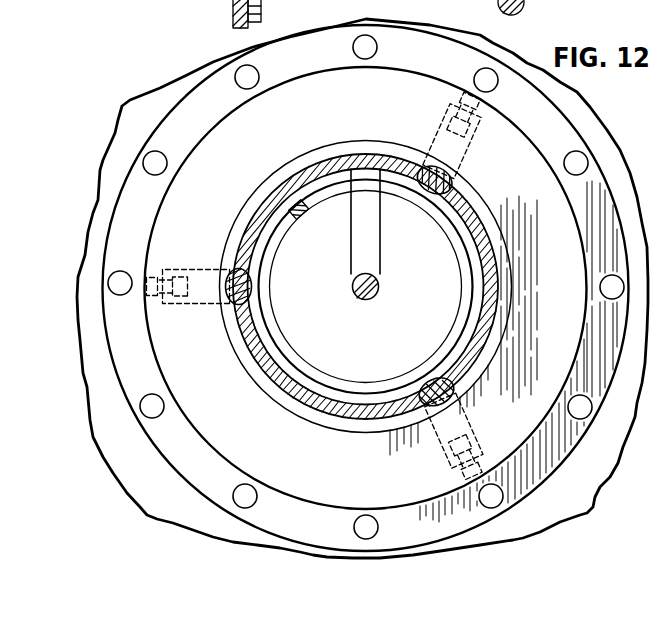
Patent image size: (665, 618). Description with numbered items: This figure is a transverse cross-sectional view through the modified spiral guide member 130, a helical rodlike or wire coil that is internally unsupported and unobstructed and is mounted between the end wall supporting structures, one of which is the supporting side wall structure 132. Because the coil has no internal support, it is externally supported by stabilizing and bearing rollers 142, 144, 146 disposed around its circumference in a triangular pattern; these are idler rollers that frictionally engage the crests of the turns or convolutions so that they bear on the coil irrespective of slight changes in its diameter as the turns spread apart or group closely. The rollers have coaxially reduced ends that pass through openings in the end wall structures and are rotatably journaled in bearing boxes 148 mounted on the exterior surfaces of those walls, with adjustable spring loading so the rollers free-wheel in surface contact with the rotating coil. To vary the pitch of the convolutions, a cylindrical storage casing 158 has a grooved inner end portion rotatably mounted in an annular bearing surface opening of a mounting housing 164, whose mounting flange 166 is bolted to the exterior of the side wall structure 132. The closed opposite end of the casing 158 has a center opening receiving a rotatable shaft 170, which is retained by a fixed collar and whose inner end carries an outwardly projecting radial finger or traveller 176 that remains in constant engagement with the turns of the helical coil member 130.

The spiral guide member 130 is at (451, 218).
The end wall supporting structure 132 is at (566, 495).
The stabilizing and bearing roller 142 is at (447, 192).
The stabilizing and bearing roller 144 is at (430, 381).
The stabilizing and bearing roller 146 is at (253, 286).
The bearing box 148 is at (496, 426).
The cylindrical storage casing 158 is at (490, 277).
The mounting housing 164 is at (564, 332).
The mounting flange 166 is at (259, 125).
The rotatable shaft 170 is at (379, 287).
The radial finger or traveller 176 is at (366, 229).